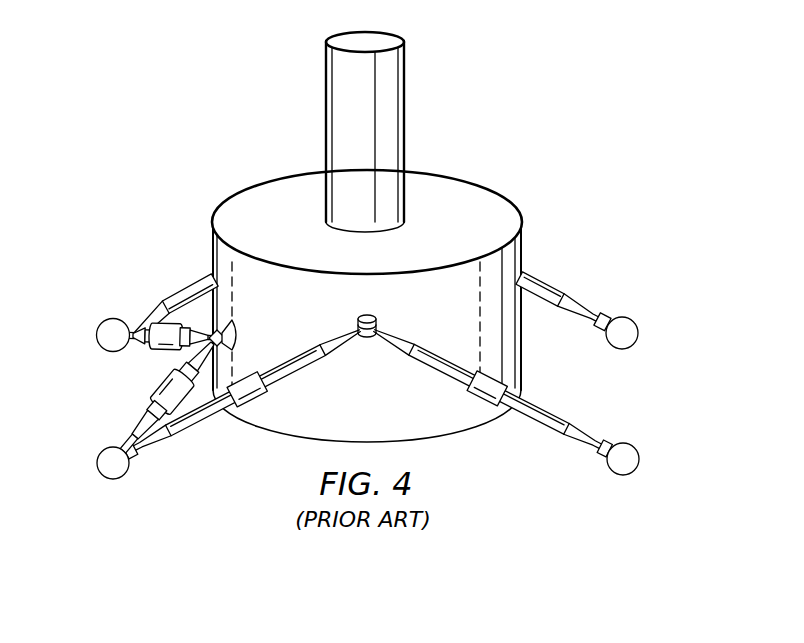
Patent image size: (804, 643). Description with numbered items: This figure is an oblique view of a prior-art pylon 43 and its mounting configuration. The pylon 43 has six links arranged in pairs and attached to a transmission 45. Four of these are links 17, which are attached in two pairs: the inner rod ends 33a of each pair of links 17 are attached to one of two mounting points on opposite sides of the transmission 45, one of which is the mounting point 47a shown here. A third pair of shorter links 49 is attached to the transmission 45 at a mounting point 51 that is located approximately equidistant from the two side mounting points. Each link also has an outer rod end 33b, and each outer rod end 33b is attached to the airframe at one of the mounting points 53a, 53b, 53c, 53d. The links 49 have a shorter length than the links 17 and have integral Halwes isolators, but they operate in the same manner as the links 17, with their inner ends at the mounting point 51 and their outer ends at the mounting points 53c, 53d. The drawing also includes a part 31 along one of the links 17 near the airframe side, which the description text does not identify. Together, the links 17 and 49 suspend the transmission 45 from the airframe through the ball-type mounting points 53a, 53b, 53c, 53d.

The pylon 43 is at (468, 90).
The transmission 45 is at (271, 196).
The mounting point 47a is at (369, 314).
The inner rod end 33a is at (367, 339).
The link 17 is at (172, 284).
The coupling block 31 is at (483, 408).
The outer rod end 33b is at (601, 458).
The link 49 is at (135, 353).
The mounting point 51 is at (237, 326).
The mounting point 53a is at (636, 322).
The mounting point 53b is at (637, 472).
The mounting point 53c is at (101, 477).
The mounting point 53d is at (101, 322).